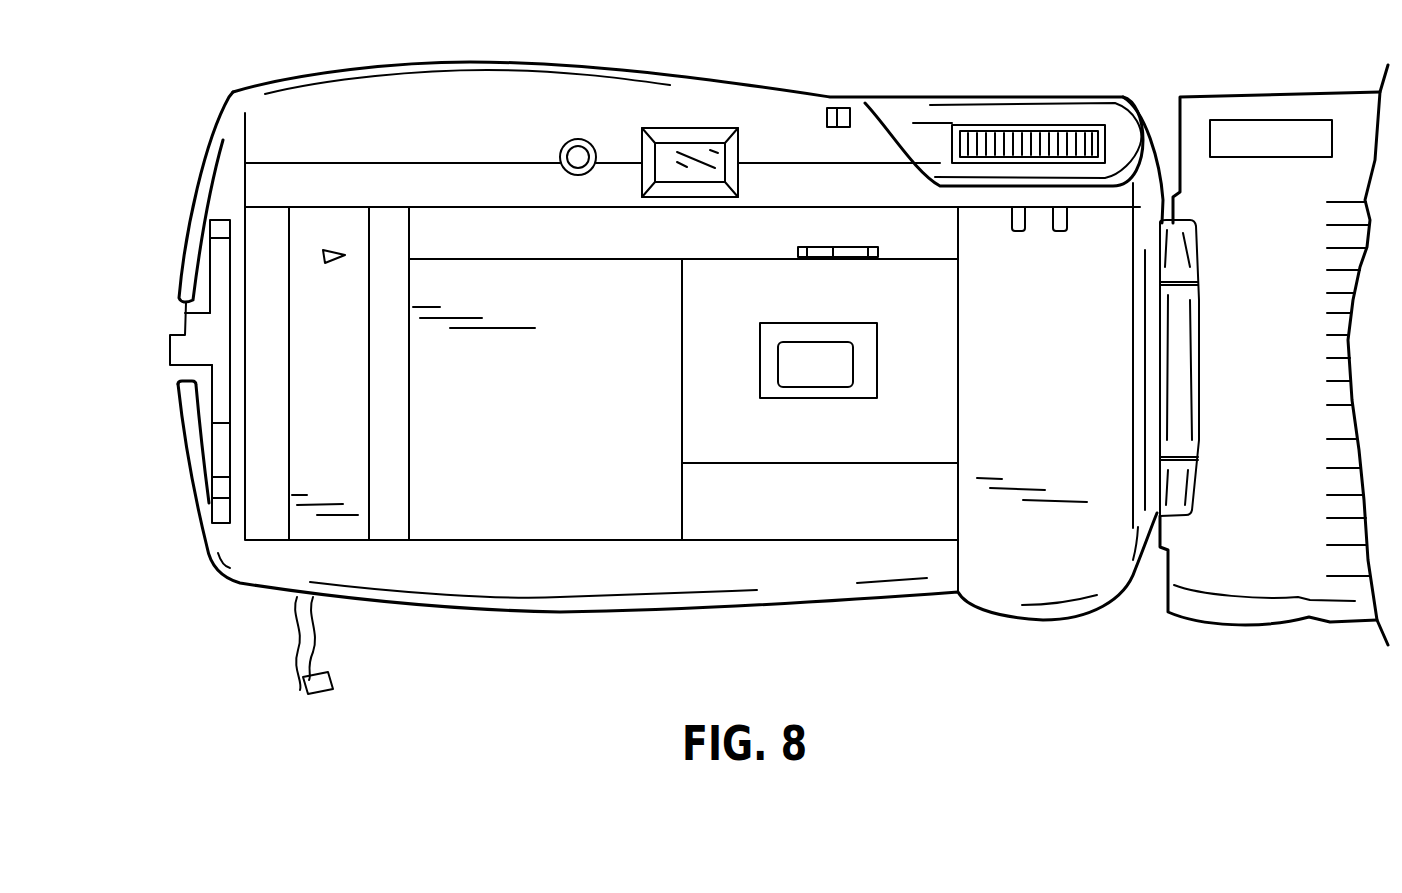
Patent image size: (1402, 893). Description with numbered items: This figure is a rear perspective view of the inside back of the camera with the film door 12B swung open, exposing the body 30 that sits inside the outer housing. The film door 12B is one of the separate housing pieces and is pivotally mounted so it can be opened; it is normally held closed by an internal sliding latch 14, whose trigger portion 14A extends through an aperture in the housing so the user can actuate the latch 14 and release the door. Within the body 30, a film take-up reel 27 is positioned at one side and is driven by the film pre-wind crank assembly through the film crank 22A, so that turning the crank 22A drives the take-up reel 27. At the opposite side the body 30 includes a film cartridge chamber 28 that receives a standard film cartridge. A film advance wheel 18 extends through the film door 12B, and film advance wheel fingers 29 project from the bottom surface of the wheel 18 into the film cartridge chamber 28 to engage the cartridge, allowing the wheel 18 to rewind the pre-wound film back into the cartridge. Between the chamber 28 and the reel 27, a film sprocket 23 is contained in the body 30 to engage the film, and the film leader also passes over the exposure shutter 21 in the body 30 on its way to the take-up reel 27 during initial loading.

The film door 12B is at (1296, 353).
The sliding latch 14 is at (200, 327).
The trigger portion 14A is at (170, 352).
The film advance wheel 18 is at (1105, 178).
The exposure shutter 21 is at (818, 384).
The film crank 22A is at (290, 672).
The film sprocket 23 is at (797, 250).
The film take-up reel 27 is at (347, 428).
The film cartridge chamber 28 is at (1062, 453).
The film advance wheel fingers 29 is at (1075, 235).
The body 30 is at (607, 500).